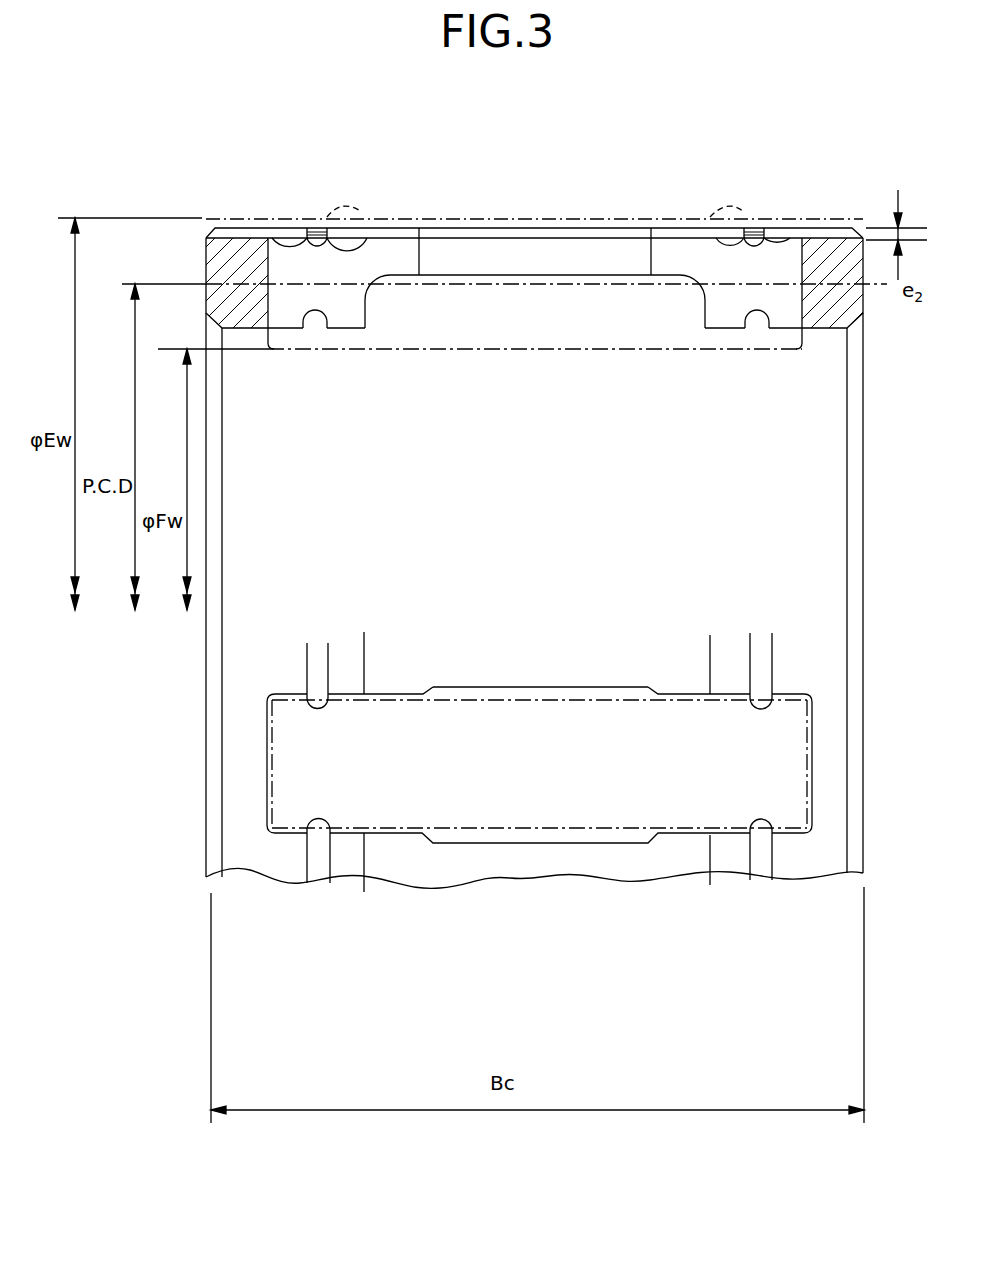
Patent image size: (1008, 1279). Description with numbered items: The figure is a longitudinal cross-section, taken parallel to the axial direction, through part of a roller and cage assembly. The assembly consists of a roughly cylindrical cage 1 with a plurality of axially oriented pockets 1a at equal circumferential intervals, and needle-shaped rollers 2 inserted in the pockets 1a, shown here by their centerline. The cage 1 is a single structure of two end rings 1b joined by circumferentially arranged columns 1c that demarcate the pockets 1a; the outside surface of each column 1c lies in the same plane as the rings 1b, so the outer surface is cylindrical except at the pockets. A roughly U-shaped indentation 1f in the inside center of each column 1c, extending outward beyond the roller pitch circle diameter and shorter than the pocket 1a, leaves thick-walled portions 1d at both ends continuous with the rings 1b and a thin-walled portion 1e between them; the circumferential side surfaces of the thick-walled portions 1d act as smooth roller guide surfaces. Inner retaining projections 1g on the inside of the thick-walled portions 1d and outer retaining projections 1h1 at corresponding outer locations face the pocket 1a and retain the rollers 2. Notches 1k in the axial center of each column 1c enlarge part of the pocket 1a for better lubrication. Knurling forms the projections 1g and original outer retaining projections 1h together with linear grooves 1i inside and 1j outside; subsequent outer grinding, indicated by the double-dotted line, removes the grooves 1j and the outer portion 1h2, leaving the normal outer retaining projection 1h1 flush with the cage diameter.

The cage 1 is at (884, 548).
The pocket 1a is at (515, 281).
The ring 1b is at (211, 227).
The column 1c is at (593, 224).
The thick-walled portion 1d is at (290, 282).
The thin-walled portion 1e is at (406, 243).
The indentation 1f is at (392, 276).
The inner retaining projection 1g is at (323, 315).
The original outer retaining projection 1h is at (347, 240).
The outer retaining projection 1h1 is at (273, 240).
The outer portion 1h2 is at (318, 228).
The linear groove 1i is at (303, 327).
The linear groove 1j is at (317, 232).
The notch 1k is at (636, 248).
The roller 2 is at (558, 346).